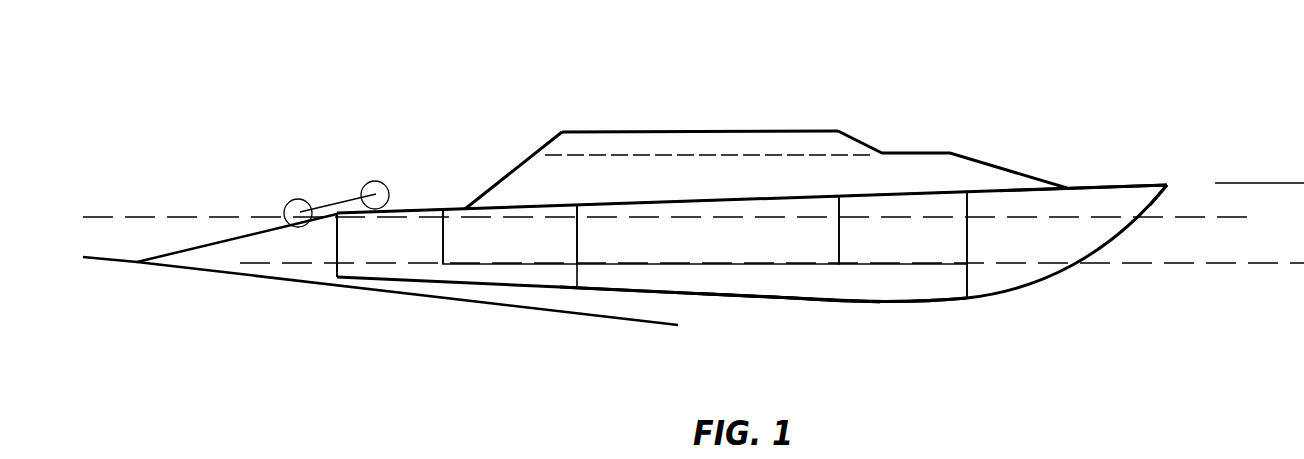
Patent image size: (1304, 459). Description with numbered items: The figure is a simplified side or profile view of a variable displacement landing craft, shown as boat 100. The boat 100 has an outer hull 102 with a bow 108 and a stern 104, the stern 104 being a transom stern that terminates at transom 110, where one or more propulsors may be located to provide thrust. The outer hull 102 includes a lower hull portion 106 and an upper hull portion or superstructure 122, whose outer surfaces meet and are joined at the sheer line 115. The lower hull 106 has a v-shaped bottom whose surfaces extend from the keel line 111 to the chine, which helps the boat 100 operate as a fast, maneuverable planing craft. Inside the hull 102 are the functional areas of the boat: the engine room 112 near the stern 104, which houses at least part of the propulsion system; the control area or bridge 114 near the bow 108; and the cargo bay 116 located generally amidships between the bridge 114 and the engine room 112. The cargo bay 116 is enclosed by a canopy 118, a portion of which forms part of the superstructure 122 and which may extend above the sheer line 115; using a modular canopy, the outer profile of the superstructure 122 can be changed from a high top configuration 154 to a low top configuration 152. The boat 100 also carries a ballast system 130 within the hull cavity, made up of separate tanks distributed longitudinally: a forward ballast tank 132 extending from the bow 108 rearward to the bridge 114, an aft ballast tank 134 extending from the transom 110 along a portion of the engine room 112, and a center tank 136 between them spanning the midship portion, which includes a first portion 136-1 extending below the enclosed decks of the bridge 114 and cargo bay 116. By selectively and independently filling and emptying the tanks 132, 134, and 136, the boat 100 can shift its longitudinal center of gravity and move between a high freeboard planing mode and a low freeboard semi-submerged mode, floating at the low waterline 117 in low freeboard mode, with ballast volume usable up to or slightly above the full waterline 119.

The boat 100 is at (1070, 78).
The outer hull 102 is at (932, 304).
The stern 104 is at (361, 276).
The lower hull portion 106 is at (1030, 277).
The bow 108 is at (1178, 176).
The transom 110 is at (335, 248).
The keel line 111 is at (615, 291).
The engine room 112 is at (522, 252).
The bridge 114 is at (917, 252).
The sheer line 115 is at (1092, 186).
The cargo bay 116 is at (720, 252).
The low waterline 117 is at (1182, 265).
The canopy 118 is at (580, 131).
The full waterline 119 is at (100, 216).
The superstructure 122 is at (983, 162).
The ballast system 130 is at (797, 301).
The forward ballast tank 132 is at (1055, 252).
The aft ballast tank 134 is at (410, 252).
The center tank 136 is at (882, 291).
The first portion of center tank 136-1 is at (814, 291).
The low top configuration 152 is at (700, 152).
The high top configuration 154 is at (648, 118).